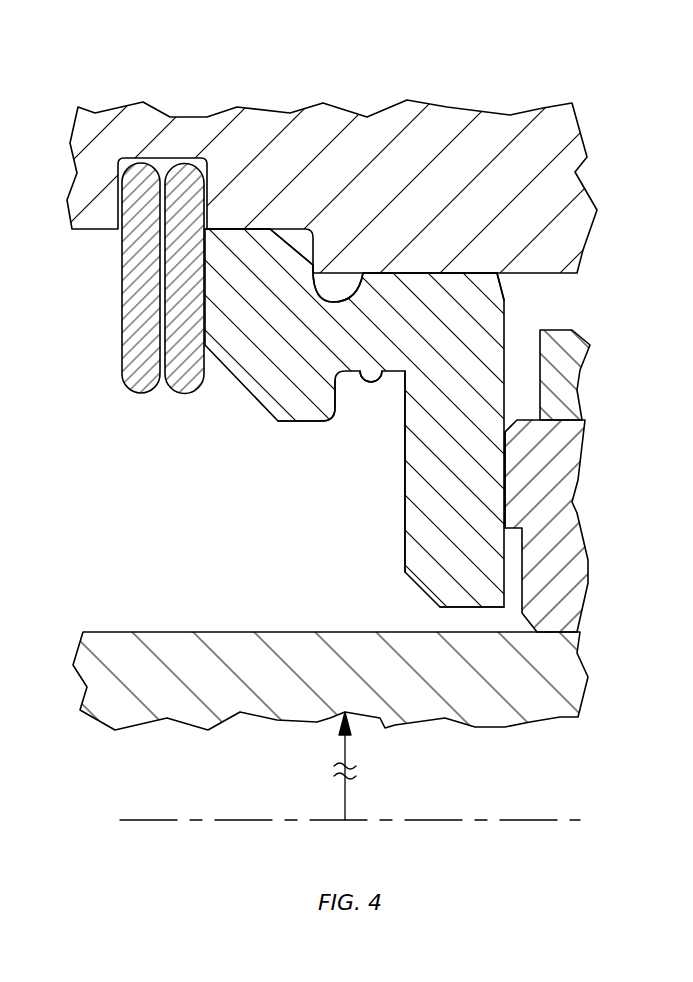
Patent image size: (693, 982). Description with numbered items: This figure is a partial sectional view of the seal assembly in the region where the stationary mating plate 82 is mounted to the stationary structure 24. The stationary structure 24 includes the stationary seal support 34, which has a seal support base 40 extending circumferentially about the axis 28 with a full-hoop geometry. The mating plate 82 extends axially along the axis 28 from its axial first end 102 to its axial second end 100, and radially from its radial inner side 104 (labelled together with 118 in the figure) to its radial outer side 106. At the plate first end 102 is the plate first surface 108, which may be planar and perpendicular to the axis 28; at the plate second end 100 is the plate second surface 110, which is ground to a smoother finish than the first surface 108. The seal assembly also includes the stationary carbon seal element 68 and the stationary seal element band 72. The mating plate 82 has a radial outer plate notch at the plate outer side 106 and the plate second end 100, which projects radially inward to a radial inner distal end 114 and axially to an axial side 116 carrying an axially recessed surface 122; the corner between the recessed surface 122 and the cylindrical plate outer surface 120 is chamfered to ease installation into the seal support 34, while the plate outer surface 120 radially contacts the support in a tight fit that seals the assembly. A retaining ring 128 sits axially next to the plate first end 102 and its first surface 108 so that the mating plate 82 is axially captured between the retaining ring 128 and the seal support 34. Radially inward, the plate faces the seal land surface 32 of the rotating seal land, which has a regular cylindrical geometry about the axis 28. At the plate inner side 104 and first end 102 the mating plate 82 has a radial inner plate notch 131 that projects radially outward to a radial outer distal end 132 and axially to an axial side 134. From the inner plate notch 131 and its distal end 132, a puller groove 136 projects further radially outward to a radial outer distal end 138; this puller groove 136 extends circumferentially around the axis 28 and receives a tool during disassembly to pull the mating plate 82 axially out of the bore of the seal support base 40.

The stationary structure 24 is at (308, 145).
The stationary seal support 34 is at (308, 145).
The seal support base 40 is at (463, 191).
The radial outer side of the mating plate 106 is at (262, 206).
The plate outer surface 120 is at (292, 233).
The axial side of the outer plate notch 116 is at (350, 247).
The axially recessed surface 122 is at (327, 268).
The radial inner distal end of the outer plate notch 114 is at (430, 272).
The mating plate 82 is at (465, 388).
The radial outer distal end of the puller groove 138 is at (375, 371).
The puller groove 136 is at (363, 400).
The axial first end of the mating plate 102 is at (109, 278).
The plate first surface 108 is at (203, 310).
The retaining ring 128 is at (109, 317).
The radial outer distal end of the inner plate notch 132 is at (300, 423).
The inner plate notch 131 is at (343, 506).
The axial side of the inner plate notch 134 is at (405, 553).
The stationary seal element band 72 is at (578, 389).
The axial second end of the mating plate 100 is at (596, 480).
The plate second surface 110 is at (505, 478).
The stationary carbon seal element 68 is at (573, 502).
The seal land surface 32 is at (100, 631).
The radial inner side of the mating plate 104 is at (478, 644).
The fourth contact surface 118 is at (468, 607).
The axis 28 is at (135, 823).